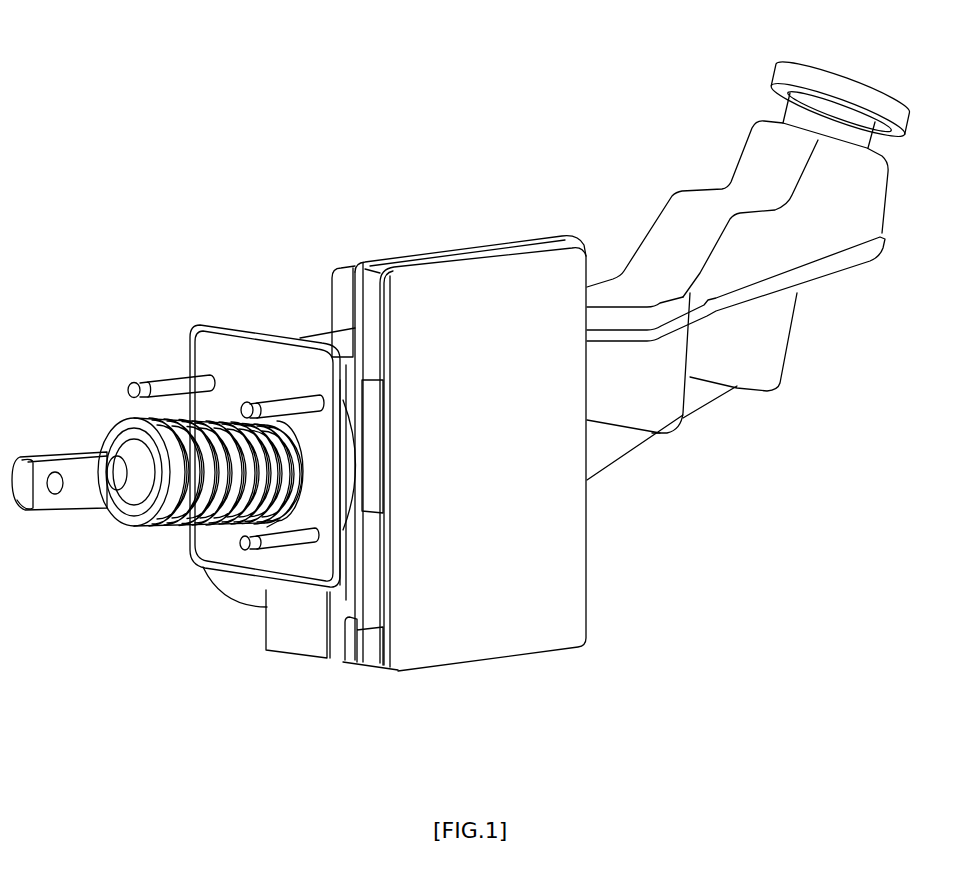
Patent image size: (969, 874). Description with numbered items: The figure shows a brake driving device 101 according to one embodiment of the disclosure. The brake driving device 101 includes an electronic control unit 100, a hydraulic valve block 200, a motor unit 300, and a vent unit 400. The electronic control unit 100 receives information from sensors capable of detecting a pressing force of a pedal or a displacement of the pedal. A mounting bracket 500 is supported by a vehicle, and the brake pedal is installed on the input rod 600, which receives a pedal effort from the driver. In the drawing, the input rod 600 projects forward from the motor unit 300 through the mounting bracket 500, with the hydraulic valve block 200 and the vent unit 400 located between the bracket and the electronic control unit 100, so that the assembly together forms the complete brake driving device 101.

The brake driving device 101 is at (203, 56).
The electronic control unit 100 is at (483, 598).
The hydraulic valve block 200 is at (292, 647).
The motor unit 300 is at (243, 583).
The vent unit 400 is at (352, 417).
The mounting bracket 500 is at (252, 362).
The input rod 600 is at (147, 502).